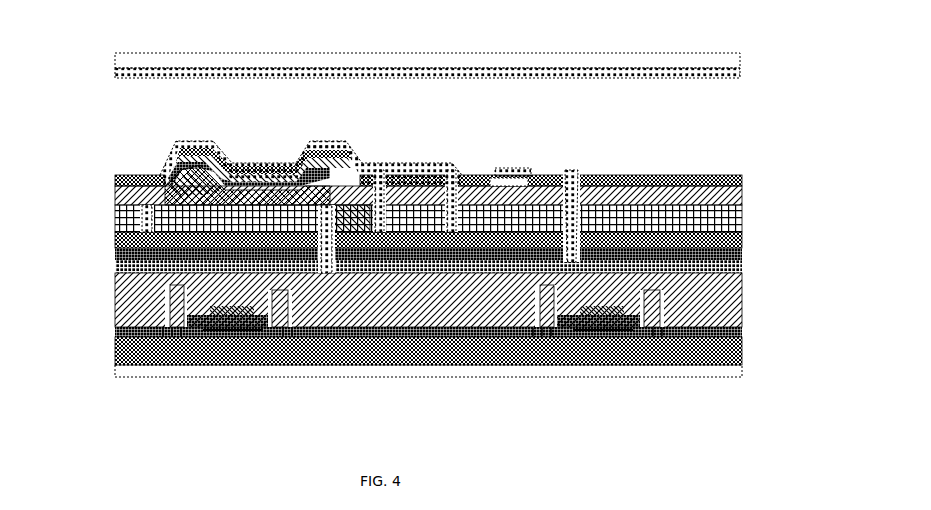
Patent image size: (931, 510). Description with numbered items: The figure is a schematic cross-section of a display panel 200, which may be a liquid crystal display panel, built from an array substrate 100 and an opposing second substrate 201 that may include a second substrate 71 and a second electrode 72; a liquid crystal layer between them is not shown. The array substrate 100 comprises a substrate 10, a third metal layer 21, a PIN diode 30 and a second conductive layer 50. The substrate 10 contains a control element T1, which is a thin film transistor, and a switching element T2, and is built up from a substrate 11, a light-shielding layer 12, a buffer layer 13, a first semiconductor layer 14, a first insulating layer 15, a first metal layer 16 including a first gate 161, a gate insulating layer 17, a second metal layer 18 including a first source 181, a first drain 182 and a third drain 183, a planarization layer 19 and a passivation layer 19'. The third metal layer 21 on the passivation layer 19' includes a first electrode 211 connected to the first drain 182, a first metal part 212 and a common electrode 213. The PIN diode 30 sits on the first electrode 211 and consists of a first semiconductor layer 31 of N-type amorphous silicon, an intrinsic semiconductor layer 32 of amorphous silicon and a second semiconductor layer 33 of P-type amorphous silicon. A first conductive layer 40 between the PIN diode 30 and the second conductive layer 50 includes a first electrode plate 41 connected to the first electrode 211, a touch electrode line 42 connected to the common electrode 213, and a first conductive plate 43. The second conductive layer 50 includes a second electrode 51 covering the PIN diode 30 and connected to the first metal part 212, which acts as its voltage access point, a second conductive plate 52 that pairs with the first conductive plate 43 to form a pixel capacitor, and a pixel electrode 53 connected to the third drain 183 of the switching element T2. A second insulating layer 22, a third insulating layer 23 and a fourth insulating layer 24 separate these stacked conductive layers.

The display panel 200 is at (73, 27).
The second substrate 201 is at (463, 58).
The second substrate 71 is at (740, 62).
The second electrode 72 is at (740, 72).
The array substrate 100 is at (440, 272).
The substrate 10 is at (63, 250).
The substrate 11 is at (742, 372).
The light-shielding layer 12 is at (113, 352).
The buffer layer 13 is at (742, 355).
The first semiconductor layer 14 is at (113, 320).
The first insulating layer 15 is at (742, 330).
The first metal layer 16 is at (113, 288).
The first gate 161 is at (113, 268).
The gate insulating layer 17 is at (742, 303).
The second metal layer 18 is at (742, 275).
The first source 181 is at (113, 248).
The first drain 182 is at (113, 232).
The third drain 183 is at (660, 175).
The planarization layer 19 is at (442, 248).
The passivation layer 19' is at (444, 231).
The third metal layer 21 is at (112, 223).
The first electrode 211 is at (113, 195).
The first metal part 212 is at (478, 170).
The common electrode 213 is at (113, 212).
The second insulating layer 22 is at (742, 215).
The third insulating layer 23 is at (740, 189).
The fourth insulating layer 24 is at (718, 175).
The PIN diode 30 is at (208, 390).
The first semiconductor layer 31 is at (175, 176).
The intrinsic semiconductor layer 32 is at (176, 166).
The second semiconductor layer 33 is at (180, 158).
The first conductive layer 40 is at (178, 190).
The first electrode plate 41 is at (380, 170).
The touch electrode line 42 is at (185, 183).
The first conductive plate 43 is at (506, 175).
The second conductive layer 50 is at (590, 175).
The second electrode 51 is at (330, 141).
The second conductive plate 52 is at (521, 168).
The pixel electrode 53 is at (572, 170).
The control element T1 is at (378, 365).
The switching element T2 is at (475, 365).